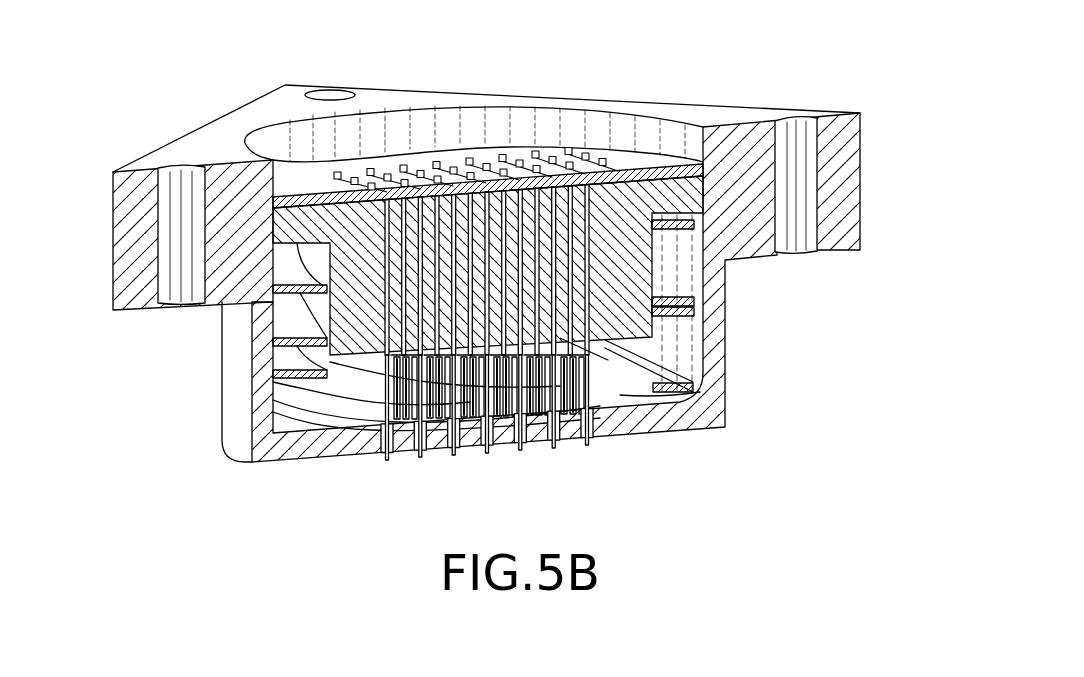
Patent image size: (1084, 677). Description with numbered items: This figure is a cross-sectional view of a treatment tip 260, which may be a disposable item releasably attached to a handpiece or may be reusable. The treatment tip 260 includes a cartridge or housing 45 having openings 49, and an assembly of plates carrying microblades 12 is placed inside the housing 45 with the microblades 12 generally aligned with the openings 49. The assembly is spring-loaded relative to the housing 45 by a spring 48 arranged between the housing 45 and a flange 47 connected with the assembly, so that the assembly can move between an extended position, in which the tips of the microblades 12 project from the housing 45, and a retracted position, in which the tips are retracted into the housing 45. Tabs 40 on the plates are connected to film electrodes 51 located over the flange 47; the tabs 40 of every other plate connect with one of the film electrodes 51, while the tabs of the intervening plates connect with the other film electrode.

The treatment tip 260 is at (866, 102).
The housing 45 is at (210, 130).
The film electrodes 51 is at (595, 158).
The flange 47 is at (640, 169).
The tabs 40 is at (338, 174).
The spring 48 is at (672, 300).
The openings 49 is at (388, 462).
The microblades 12 is at (453, 456).